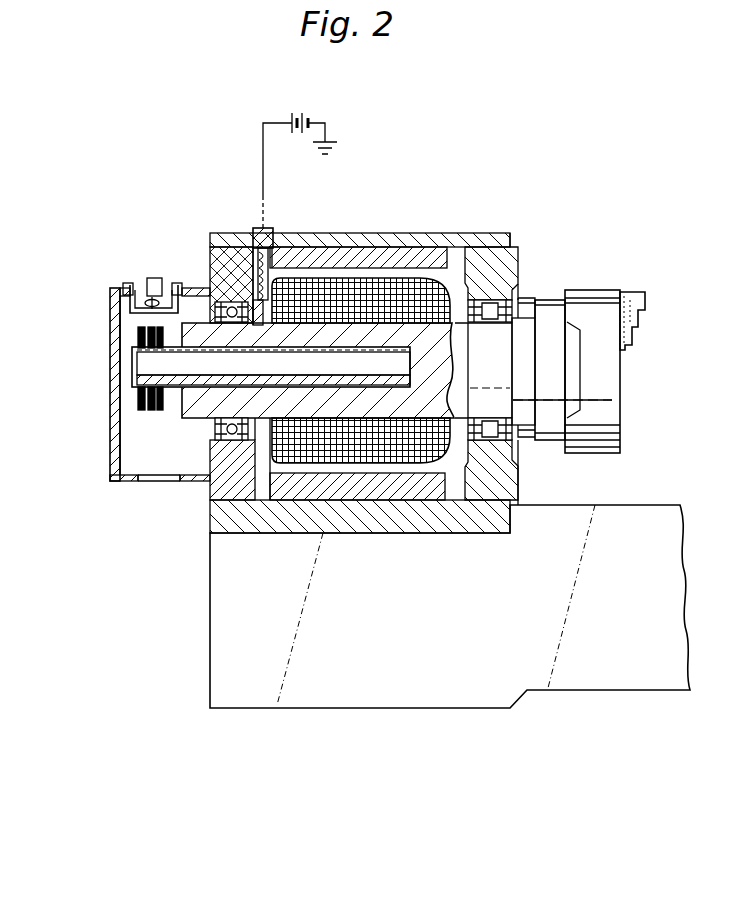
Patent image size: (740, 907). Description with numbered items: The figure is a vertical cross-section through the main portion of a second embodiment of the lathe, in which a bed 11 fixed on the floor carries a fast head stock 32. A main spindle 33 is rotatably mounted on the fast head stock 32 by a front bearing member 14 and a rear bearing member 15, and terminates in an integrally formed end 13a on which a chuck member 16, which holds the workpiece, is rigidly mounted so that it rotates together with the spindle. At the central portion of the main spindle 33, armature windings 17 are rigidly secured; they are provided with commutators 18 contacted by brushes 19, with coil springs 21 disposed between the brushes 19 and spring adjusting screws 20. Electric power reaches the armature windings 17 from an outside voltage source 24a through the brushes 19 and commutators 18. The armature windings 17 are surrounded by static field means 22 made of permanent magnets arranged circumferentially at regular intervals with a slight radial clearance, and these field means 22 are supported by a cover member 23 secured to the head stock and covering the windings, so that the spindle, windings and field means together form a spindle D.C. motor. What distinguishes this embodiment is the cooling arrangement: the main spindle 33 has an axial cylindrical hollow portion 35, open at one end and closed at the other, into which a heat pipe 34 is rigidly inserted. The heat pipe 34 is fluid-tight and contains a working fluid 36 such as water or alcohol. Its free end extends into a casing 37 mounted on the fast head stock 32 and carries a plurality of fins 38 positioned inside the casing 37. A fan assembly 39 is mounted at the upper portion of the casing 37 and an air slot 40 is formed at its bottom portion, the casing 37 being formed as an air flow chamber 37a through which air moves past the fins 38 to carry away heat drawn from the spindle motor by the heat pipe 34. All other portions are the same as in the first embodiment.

The bed 11 is at (462, 700).
The end of main spindle 13a is at (554, 296).
The front bearing member 14 is at (517, 287).
The rear bearing member 15 is at (217, 303).
The chuck member 16 is at (618, 290).
The armature windings 17 is at (372, 500).
The commutators 18 is at (220, 300).
The brushes 19 is at (247, 300).
The spring adjusting screws 20 is at (255, 228).
The coil springs 21 is at (266, 250).
The static field means 22 is at (375, 240).
The cover member 23 is at (293, 247).
The outside voltage source 24a is at (305, 112).
The fast head stock 32 is at (420, 283).
The main spindle 33 is at (405, 325).
The heat pipe 34 is at (132, 365).
The cylindrical hollow portion 35 is at (387, 392).
The working fluid 36 is at (200, 368).
The casing 37 is at (118, 482).
The air flow chamber 37a is at (125, 458).
The fins 38 is at (138, 410).
The fan assembly 39 is at (152, 283).
The air slot 40 is at (168, 482).